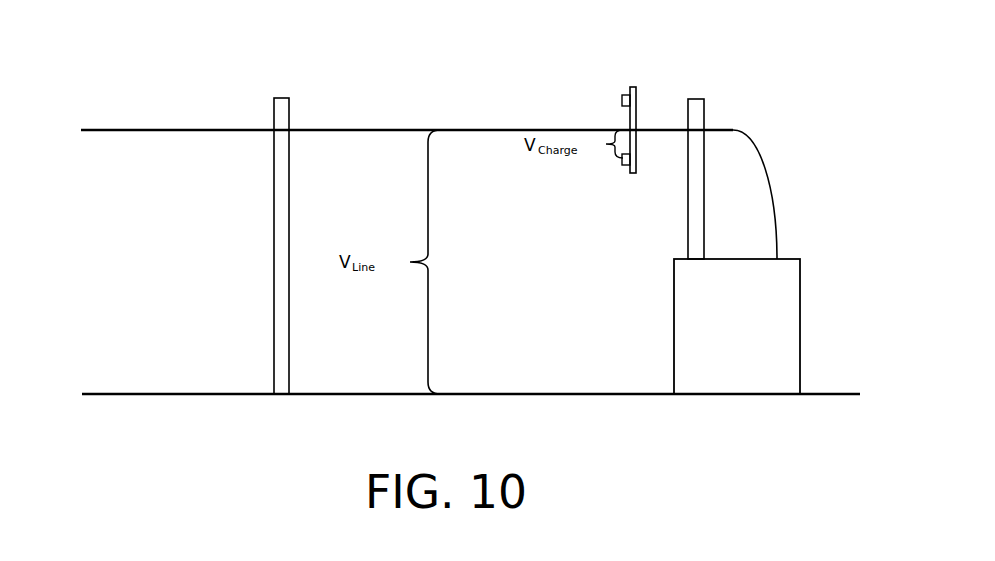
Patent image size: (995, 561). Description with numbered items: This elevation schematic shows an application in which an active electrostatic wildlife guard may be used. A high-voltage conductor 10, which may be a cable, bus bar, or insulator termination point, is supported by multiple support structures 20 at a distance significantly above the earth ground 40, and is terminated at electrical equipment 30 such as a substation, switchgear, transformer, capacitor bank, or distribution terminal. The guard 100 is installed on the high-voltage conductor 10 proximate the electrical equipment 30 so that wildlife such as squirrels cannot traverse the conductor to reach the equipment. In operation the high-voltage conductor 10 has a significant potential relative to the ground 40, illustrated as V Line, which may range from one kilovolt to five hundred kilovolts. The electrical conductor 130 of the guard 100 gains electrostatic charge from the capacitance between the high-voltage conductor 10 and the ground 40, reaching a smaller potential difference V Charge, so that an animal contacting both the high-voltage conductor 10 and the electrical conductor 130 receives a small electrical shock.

The high-voltage conductor 10 is at (137, 127).
The support structure 20 is at (290, 113).
The electrical equipment 30 is at (674, 320).
The earth ground 40 is at (490, 393).
The guard 100 is at (633, 89).
The electrical conductor 130 is at (624, 166).